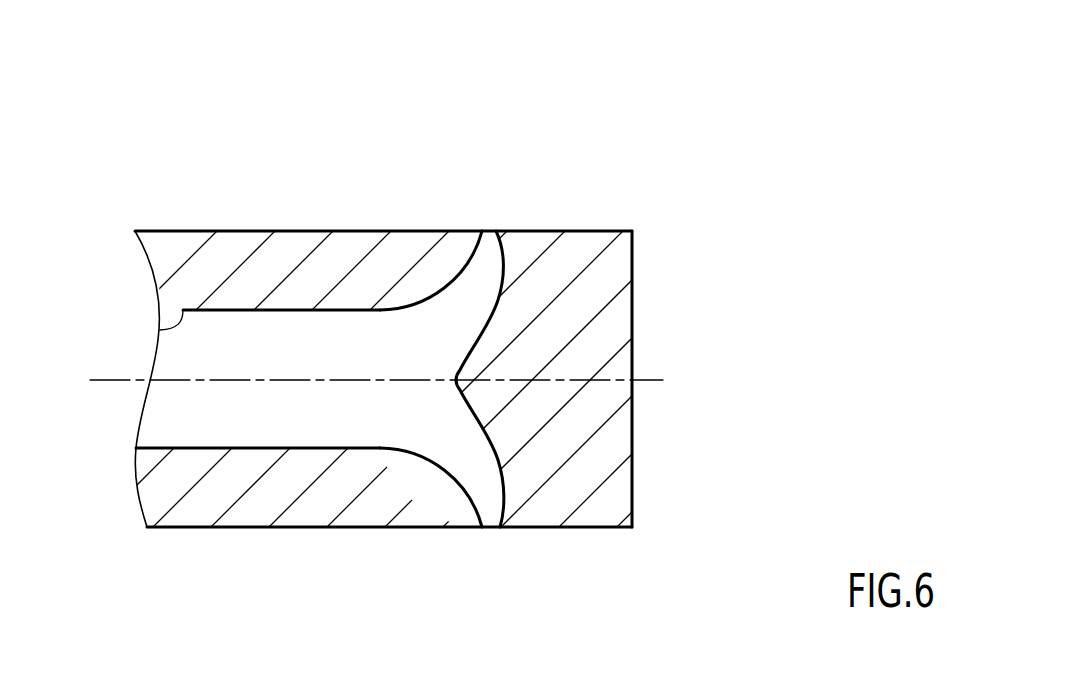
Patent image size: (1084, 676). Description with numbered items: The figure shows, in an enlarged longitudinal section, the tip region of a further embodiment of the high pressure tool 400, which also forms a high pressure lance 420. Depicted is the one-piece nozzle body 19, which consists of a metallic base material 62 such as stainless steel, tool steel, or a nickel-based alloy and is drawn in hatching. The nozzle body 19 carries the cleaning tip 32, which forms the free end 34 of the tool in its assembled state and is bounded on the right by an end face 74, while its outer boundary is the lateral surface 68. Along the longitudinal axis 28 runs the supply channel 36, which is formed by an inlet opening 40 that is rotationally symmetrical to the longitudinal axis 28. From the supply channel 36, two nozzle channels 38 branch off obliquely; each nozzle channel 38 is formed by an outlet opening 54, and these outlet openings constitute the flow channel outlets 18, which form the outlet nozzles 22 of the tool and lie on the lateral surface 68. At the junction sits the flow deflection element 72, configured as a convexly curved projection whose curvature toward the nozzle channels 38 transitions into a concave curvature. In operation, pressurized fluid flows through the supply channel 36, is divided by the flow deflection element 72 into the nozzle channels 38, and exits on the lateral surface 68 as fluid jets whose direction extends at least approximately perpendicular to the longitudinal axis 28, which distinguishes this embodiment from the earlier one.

The nozzle body 19 is at (472, 333).
The lateral surface 68 is at (196, 231).
The metallic base material 62 is at (340, 245).
The flow channel outlets 18 is at (478, 387).
The outlet nozzles 22 is at (483, 210).
The outlet opening 54 is at (496, 231).
The nozzle channels 38 is at (492, 260).
The flow deflection element 72 is at (478, 362).
The cleaning tip 32 is at (472, 387).
The free end 34 is at (472, 387).
The end face 74 is at (633, 347).
The inlet opening 40 is at (160, 330).
The longitudinal axis 28 is at (102, 382).
The supply channel 36 is at (251, 444).
The high pressure tool 400 is at (592, 97).
The high pressure lance 420 is at (659, 122).